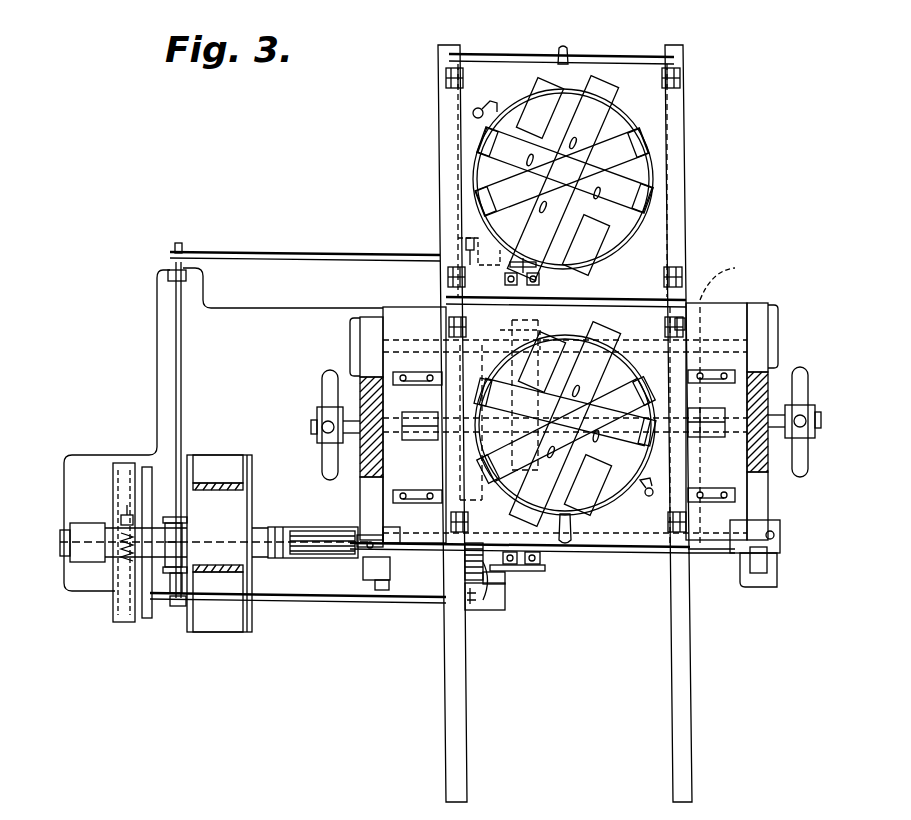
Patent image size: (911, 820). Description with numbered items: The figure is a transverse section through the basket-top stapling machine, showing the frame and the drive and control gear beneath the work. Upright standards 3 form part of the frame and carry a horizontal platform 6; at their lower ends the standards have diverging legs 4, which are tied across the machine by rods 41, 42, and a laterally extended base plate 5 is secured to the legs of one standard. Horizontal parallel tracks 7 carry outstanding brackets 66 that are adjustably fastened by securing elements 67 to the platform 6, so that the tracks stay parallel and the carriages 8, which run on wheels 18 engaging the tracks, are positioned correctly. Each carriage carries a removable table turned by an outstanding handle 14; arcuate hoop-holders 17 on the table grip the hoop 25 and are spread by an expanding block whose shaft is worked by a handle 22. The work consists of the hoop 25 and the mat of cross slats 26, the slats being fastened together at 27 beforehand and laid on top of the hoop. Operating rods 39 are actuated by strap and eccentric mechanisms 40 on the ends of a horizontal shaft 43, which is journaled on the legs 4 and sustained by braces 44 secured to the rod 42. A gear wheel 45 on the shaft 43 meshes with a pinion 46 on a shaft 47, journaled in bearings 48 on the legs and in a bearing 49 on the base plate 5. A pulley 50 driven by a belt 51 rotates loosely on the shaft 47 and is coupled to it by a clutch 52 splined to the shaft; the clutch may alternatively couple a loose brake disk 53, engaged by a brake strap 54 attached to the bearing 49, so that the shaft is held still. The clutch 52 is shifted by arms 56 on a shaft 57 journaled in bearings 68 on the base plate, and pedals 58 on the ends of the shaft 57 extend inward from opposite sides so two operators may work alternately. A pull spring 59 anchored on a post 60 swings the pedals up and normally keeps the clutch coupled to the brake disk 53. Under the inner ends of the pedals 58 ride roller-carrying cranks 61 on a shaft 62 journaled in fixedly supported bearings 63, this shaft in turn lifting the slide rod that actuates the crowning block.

The standards 3 is at (360, 384).
The diverging legs 4 is at (360, 325).
The base plate 5 is at (249, 312).
The horizontal platform 6 is at (412, 545).
The tracks 7 is at (448, 52).
The carriages 8 is at (492, 60).
The outstanding handle 14 is at (569, 58).
The arcuate hoop-holders 17 is at (644, 136).
The wheels 18 is at (446, 76).
The handle 22 is at (473, 113).
The hoop 25 is at (618, 100).
The slats 26 is at (546, 96).
The fastening 27 is at (528, 160).
The operating rods 39 is at (322, 424).
The strap and eccentric mechanisms 40 is at (322, 458).
The rod 41 is at (700, 554).
The rod 42 is at (660, 340).
The horizontal shaft 43 is at (311, 428).
The braces 44 is at (500, 342).
The gear wheel 45 is at (468, 456).
The pinion 46 is at (512, 588).
The shaft 47 is at (68, 536).
The bearings 48 is at (408, 552).
The bearing 49 is at (100, 562).
The pulley 50 is at (252, 502).
The belt 51 is at (212, 462).
The clutch 52 is at (184, 530).
The brake disk 53 is at (146, 618).
The brake strap 54 is at (118, 615).
The arms 56 is at (185, 512).
The shaft 57 is at (176, 368).
The pedals 58 is at (320, 252).
The pull spring 59 is at (384, 592).
The post 60 is at (363, 570).
The roller-carrying cranks 61 is at (490, 258).
The shaft 62 is at (500, 578).
The bearings 63 is at (540, 282).
The brackets 66 is at (720, 338).
The securing elements 67 is at (718, 482).
The bearings 68 is at (168, 276).